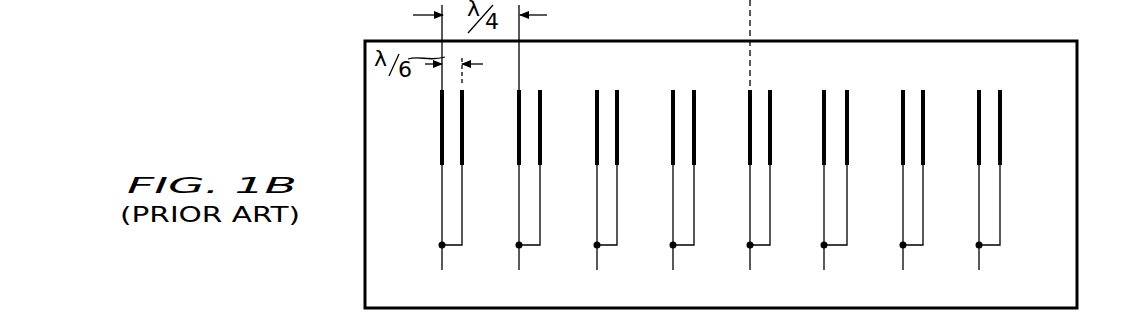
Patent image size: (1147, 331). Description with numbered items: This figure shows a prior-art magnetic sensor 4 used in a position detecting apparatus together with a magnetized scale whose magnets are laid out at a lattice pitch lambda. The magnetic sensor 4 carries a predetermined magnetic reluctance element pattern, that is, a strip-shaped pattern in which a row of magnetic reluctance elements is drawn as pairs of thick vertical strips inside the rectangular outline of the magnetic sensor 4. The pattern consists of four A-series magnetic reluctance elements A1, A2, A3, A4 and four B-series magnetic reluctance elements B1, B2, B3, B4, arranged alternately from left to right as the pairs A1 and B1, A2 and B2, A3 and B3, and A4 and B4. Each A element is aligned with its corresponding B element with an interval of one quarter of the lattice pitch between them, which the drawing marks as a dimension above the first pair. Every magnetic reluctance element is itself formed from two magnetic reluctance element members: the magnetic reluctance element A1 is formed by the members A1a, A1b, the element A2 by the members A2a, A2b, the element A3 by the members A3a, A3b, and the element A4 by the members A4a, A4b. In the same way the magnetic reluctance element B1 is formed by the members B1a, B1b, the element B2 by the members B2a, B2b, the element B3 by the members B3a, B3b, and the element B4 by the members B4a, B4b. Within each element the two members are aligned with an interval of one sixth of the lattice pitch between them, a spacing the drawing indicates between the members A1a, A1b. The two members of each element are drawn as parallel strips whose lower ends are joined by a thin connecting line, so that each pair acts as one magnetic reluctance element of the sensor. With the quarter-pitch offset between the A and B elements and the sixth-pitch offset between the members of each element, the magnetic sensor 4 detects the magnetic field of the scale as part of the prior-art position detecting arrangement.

The magnetic sensor 4 is at (1077, 232).
The magnetic reluctance element A1 is at (418, 180).
The magnetic reluctance element member A1a is at (440, 115).
The magnetic reluctance element member A1b is at (460, 152).
The magnetic reluctance element B1 is at (545, 157).
The magnetic reluctance element member B1a is at (519, 88).
The magnetic reluctance element member B1b is at (541, 88).
The magnetic reluctance element A2 is at (582, 180).
The magnetic reluctance element member A2a is at (597, 101).
The magnetic reluctance element member A2b is at (617, 136).
The magnetic reluctance element B2 is at (681, 157).
The magnetic reluctance element member B2a is at (673, 88).
The magnetic reluctance element member B2b is at (694, 88).
The magnetic reluctance element A3 is at (735, 180).
The magnetic reluctance element member A3a is at (750, 101).
The magnetic reluctance element member A3b is at (770, 136).
The magnetic reluctance element B3 is at (811, 157).
The magnetic reluctance element member B3a is at (824, 88).
The magnetic reluctance element member B3b is at (847, 88).
The magnetic reluctance element A4 is at (888, 180).
The magnetic reluctance element member A4a is at (903, 101).
The magnetic reluctance element member A4b is at (923, 136).
The magnetic reluctance element B4 is at (996, 157).
The magnetic reluctance element member B4a is at (979, 88).
The magnetic reluctance element member B4b is at (1000, 88).